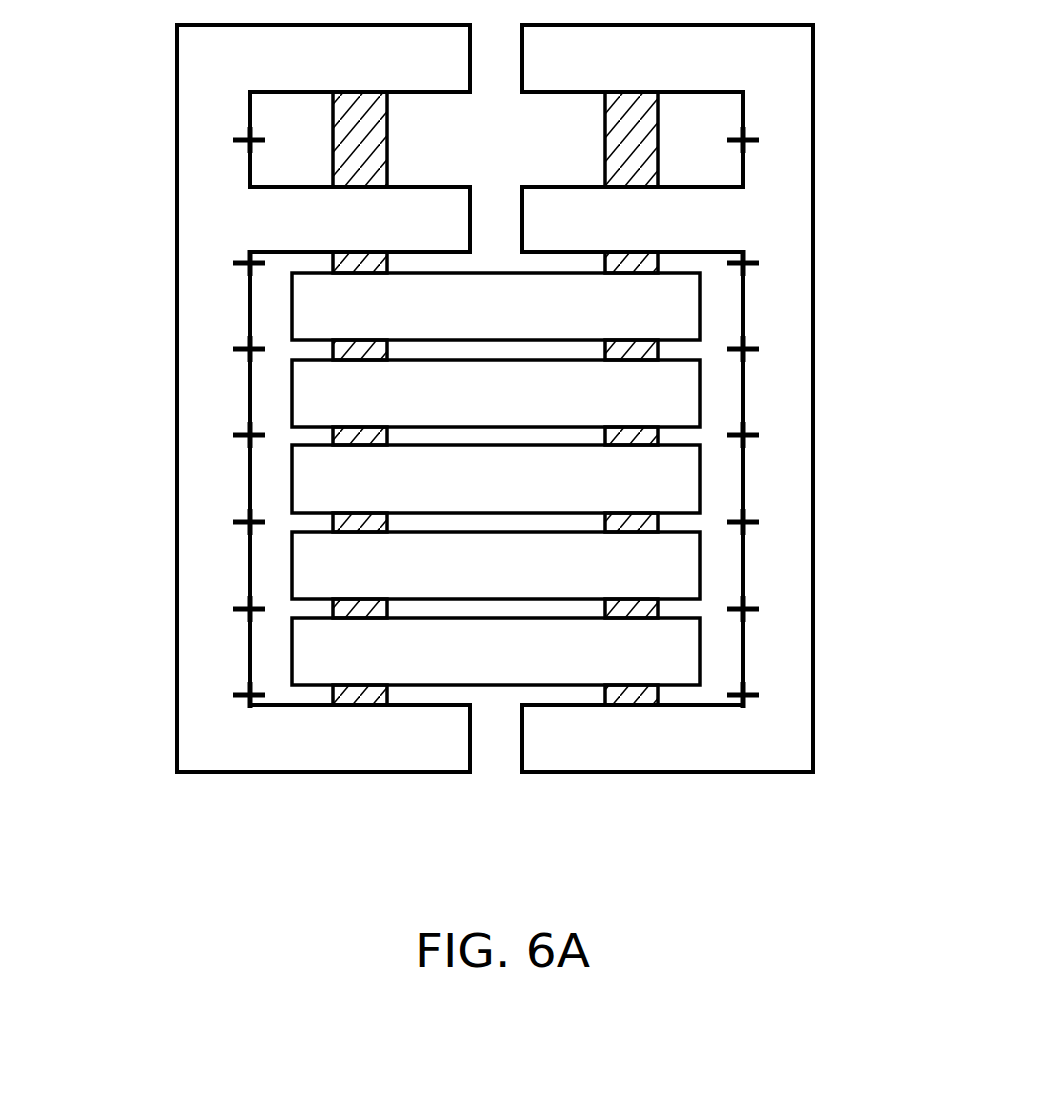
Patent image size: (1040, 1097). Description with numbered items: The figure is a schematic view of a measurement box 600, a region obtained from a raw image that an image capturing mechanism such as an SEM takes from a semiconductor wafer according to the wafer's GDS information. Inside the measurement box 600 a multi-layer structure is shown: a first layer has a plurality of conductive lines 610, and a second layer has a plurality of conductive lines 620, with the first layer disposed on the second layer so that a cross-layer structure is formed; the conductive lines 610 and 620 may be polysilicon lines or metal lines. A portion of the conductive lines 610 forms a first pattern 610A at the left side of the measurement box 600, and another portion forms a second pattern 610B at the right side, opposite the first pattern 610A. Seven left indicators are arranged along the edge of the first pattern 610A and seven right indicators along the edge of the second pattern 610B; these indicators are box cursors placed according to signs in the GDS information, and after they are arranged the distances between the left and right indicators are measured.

The measurement box 600 is at (496, 465).
The conductive lines 610 is at (292, 565).
The first pattern 610A is at (397, 68).
The second pattern 610B is at (673, 68).
The conductive lines 620 is at (333, 608).